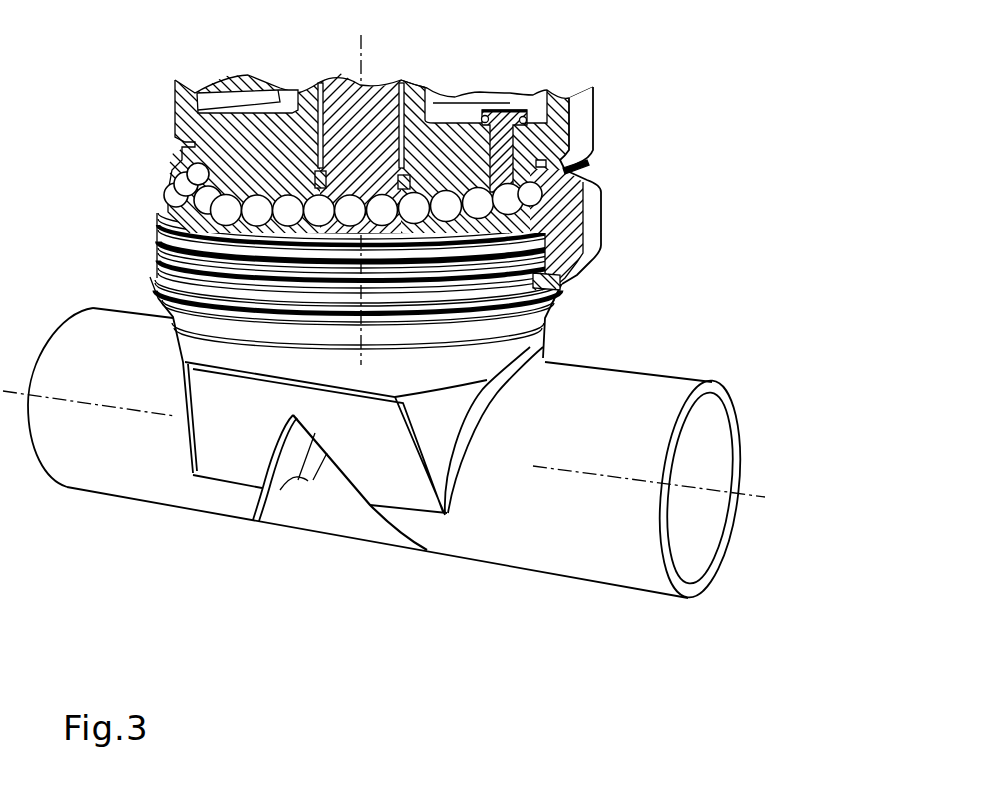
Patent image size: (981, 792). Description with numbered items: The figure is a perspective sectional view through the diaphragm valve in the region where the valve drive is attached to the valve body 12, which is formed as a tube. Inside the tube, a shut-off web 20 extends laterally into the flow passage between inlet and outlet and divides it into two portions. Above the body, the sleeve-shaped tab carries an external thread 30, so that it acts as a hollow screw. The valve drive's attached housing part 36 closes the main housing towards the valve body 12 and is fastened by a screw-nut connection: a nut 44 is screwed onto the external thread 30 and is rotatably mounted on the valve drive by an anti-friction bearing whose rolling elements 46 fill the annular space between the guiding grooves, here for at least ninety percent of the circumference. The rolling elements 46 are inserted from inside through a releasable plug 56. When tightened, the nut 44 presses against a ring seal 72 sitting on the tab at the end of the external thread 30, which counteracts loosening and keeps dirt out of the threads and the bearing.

The valve body 12 is at (488, 552).
The shut-off web 20 is at (323, 502).
The external thread 30 is at (153, 247).
The attached housing part 36 is at (567, 129).
The nut 44 is at (594, 220).
The rolling elements 46 is at (592, 178).
The releasable plug 56 is at (503, 120).
The ring seal 72 is at (563, 282).